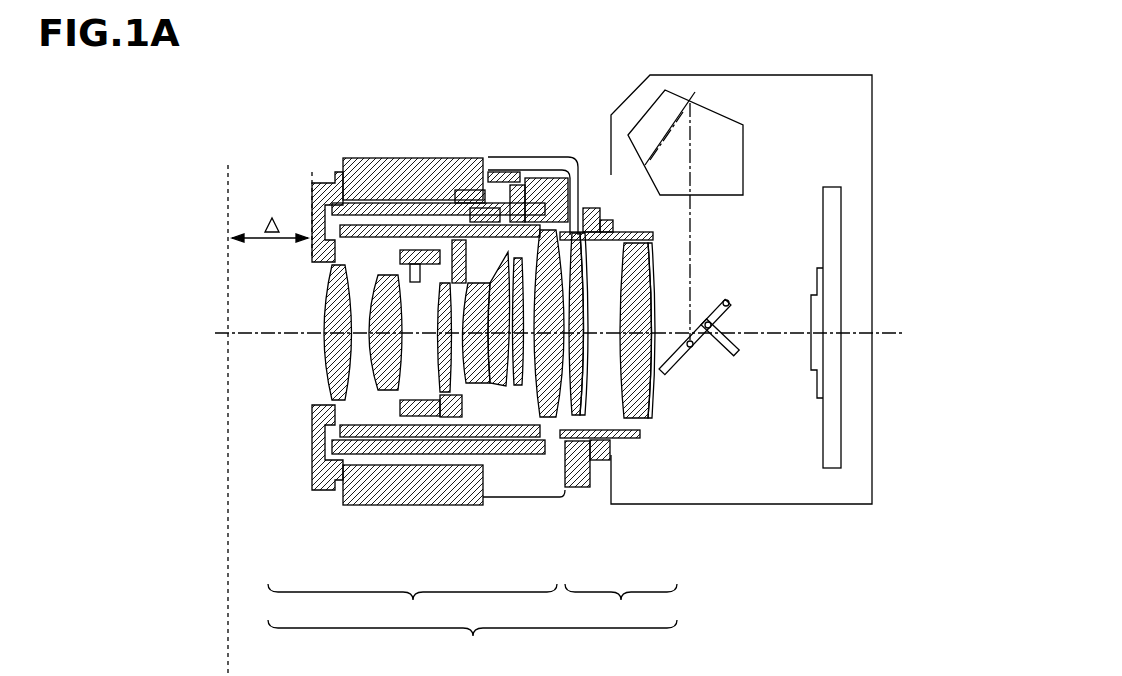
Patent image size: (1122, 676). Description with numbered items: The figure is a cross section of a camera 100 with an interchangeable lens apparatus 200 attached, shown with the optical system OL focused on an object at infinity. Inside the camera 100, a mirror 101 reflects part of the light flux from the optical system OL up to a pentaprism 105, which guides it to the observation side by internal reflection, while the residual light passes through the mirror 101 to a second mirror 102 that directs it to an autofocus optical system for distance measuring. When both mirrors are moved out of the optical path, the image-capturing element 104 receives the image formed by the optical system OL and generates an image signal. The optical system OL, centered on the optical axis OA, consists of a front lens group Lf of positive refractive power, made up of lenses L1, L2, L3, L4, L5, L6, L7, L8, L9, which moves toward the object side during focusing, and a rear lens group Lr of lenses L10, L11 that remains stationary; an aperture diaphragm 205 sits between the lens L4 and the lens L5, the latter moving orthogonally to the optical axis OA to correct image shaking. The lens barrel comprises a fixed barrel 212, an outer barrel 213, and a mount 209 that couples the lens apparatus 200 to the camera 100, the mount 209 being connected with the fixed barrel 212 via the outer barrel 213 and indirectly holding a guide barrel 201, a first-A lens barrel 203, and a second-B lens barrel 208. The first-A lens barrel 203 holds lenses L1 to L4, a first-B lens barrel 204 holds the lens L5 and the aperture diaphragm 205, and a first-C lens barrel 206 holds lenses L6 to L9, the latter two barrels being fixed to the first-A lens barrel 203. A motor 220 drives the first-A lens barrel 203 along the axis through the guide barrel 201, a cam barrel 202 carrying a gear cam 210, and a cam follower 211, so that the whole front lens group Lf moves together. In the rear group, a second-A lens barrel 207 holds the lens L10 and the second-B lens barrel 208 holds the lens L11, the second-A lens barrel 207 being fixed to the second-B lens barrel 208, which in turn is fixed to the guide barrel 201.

The camera 100 is at (763, 27).
The mirror 101 is at (677, 368).
The mirror 102 is at (737, 358).
The image-capturing element 104 is at (813, 370).
The pentaprism 105 is at (730, 112).
The lens apparatus 200 is at (445, 32).
The guide barrel 201 is at (478, 210).
The cam barrel 202 is at (470, 195).
The 1A lens barrel 203 is at (340, 187).
The 1B lens barrel 204 is at (428, 235).
The aperture diaphragm 205 is at (372, 240).
The 1C lens barrel 206 is at (522, 195).
The 2A lens barrel 207 is at (600, 215).
The 2B lens barrel 208 is at (615, 240).
The mount 209 is at (622, 240).
The gear cam 210 is at (497, 165).
The cam follower 211 is at (445, 205).
The fixed barrel 212 is at (318, 182).
The outer barrel 213 is at (492, 158).
The motor 220 is at (545, 175).
The lens L1 is at (333, 372).
The lens L2 is at (365, 380).
The lens L3 is at (385, 390).
The lens L4 is at (440, 385).
The lens L5 is at (468, 390).
The lens L6 is at (497, 385).
The lens L7 is at (540, 395).
The lens L8 is at (560, 400).
The lens L9 is at (573, 400).
The lens L10 is at (603, 400).
The lens L11 is at (626, 405).
The front lens group Lf is at (412, 604).
The rear lens group Lr is at (621, 604).
The optical system OL is at (472, 642).
The optical axis OA is at (269, 336).